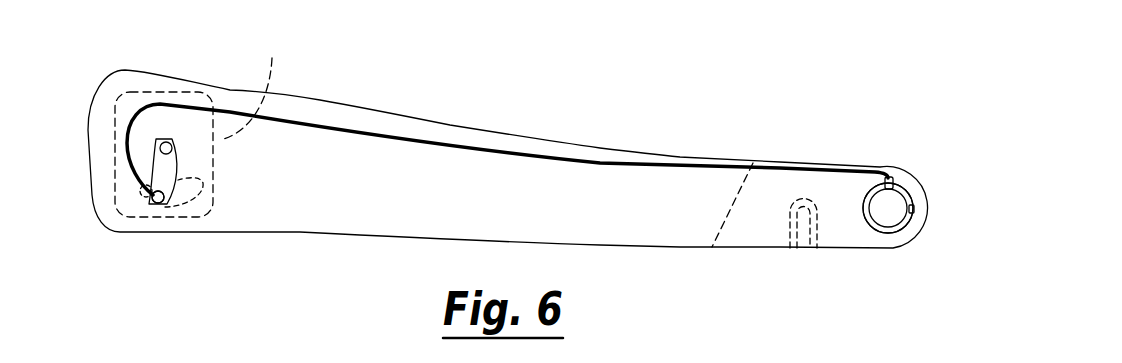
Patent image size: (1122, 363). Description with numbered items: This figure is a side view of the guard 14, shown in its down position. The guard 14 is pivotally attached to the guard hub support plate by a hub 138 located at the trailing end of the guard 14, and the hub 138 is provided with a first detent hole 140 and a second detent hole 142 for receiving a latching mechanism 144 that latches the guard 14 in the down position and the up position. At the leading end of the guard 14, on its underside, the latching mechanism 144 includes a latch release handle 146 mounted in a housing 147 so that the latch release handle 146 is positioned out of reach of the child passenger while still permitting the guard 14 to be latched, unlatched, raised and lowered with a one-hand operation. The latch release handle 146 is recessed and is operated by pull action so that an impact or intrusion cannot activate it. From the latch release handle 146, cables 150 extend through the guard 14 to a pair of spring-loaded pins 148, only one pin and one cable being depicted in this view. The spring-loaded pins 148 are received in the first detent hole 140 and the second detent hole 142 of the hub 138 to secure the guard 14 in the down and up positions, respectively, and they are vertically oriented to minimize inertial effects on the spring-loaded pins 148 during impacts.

The guard 14 is at (360, 110).
The hub 138 is at (880, 232).
The first detent hole 140 is at (900, 186).
The second detent hole 142 is at (913, 211).
The latching mechanism 144 is at (158, 211).
The latch release handle 146 is at (177, 163).
The housing 147 is at (203, 124).
The spring-loaded pins 148 is at (880, 177).
The cables 150 is at (127, 127).